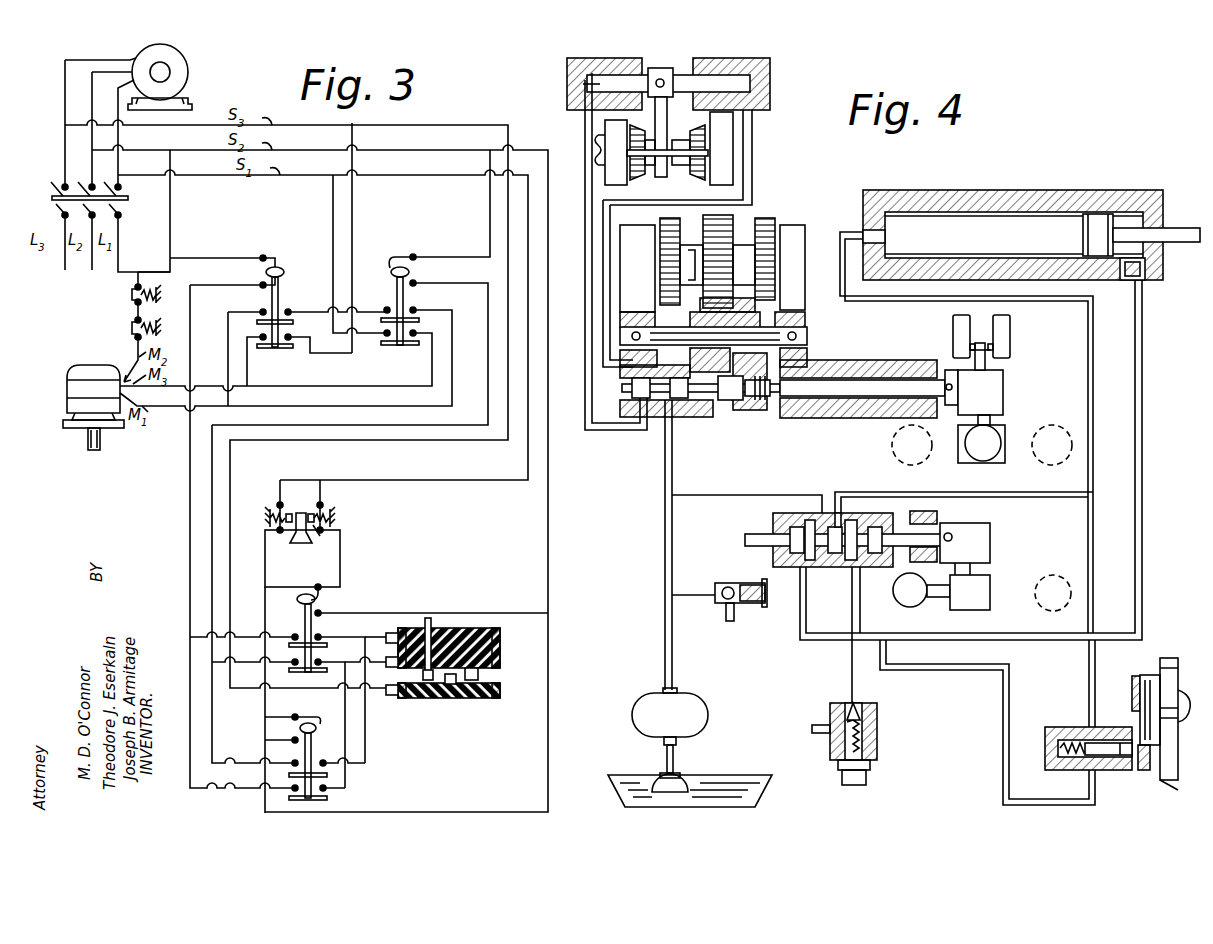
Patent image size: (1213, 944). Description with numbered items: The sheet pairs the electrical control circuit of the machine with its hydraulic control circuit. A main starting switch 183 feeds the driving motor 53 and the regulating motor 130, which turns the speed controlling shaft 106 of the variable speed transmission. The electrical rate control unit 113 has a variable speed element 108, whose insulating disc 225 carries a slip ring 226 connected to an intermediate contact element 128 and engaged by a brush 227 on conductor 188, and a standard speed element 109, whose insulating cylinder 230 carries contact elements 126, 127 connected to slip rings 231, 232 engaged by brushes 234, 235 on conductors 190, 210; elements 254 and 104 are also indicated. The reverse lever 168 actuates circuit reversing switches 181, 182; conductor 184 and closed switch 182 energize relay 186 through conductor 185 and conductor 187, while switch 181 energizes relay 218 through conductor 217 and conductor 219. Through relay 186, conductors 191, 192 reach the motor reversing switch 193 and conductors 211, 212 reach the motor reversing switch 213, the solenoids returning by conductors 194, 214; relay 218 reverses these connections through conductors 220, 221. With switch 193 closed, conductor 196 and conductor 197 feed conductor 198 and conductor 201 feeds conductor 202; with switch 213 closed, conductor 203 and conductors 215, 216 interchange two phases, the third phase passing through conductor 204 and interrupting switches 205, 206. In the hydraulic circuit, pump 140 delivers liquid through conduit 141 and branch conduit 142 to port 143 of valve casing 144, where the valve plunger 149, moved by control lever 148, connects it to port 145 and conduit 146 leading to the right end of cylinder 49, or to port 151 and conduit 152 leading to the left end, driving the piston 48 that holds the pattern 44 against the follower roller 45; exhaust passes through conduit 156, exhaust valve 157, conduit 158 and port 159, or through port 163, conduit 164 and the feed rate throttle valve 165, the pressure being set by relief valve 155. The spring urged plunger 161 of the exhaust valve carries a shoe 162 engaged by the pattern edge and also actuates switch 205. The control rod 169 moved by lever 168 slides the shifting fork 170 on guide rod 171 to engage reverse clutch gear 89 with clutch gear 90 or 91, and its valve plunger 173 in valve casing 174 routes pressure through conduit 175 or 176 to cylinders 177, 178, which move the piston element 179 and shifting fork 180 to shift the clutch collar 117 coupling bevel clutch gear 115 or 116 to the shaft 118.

In FIG. 3, the driving motor 53 is at (188, 62).
In FIG. 3, the main starting switch 183 is at (128, 196).
In FIG. 3, the conductor 204 is at (170, 258).
In FIG. 3, the interrupting switch 205 is at (130, 296).
In FIG. 4, the interrupting switch 205 is at (1050, 757).
In FIG. 3, the interrupting switch 206 is at (130, 330).
In FIG. 3, the regulating motor 130 is at (83, 365).
In FIG. 3, the speed controlling shaft 106 is at (88, 450).
In FIG. 3, the conductor 194 is at (170, 225).
In FIG. 3, the conductor 196 is at (333, 214).
In FIG. 3, the conductor 201 is at (352, 208).
In FIG. 3, the motor reversing switch 193 is at (300, 255).
In FIG. 3, the motor reversing switch 213 is at (394, 273).
In FIG. 3, the conductor 214 is at (488, 228).
In FIG. 3, the conductor 197 is at (300, 305).
In FIG. 3, the conductor 215 is at (366, 312).
In FIG. 3, the conductor 188 is at (506, 272).
In FIG. 3, the conductor 198 is at (228, 350).
In FIG. 3, the conductor 202 is at (250, 363).
In FIG. 3, the conductor 203 is at (302, 386).
In FIG. 3, the conductor 216 is at (396, 404).
In FIG. 3, the conductor 212 is at (288, 436).
In FIG. 3, the conductor 192 is at (188, 470).
In FIG. 3, the conductor 184 is at (442, 480).
In FIG. 3, the conductor 187 is at (546, 505).
In FIG. 3, the circuit reversing switch 181 is at (298, 512).
In FIG. 4, the circuit reversing switch 181 is at (952, 335).
In FIG. 3, the circuit reversing switch 182 is at (322, 547).
In FIG. 4, the circuit reversing switch 182 is at (1010, 333).
In FIG. 3, the reverse lever 168 is at (300, 548).
In FIG. 4, the reverse lever 168 is at (988, 440).
In FIG. 3, the conductor 185 is at (340, 545).
In FIG. 3, the relay 186 is at (322, 606).
In FIG. 3, the conductor 190 is at (338, 637).
In FIG. 3, the conductor 210 is at (340, 662).
In FIG. 3, the conductor 217 is at (264, 586).
In FIG. 3, the conductor 211 is at (244, 660).
In FIG. 3, the conductor 191 is at (244, 636).
In FIG. 3, the relay 218 is at (276, 731).
In FIG. 3, the conductor 221 is at (343, 716).
In FIG. 3, the conductor 220 is at (378, 745).
In FIG. 3, the conductor 219 is at (398, 812).
In FIG. 3, the brush 234 is at (386, 635).
In FIG. 3, the brush 235 is at (386, 659).
In FIG. 3, the contact element 126 is at (422, 674).
In FIG. 3, the brush 227 is at (390, 700).
In FIG. 3, the intermediate contact element 128 is at (445, 700).
In FIG. 3, the plate or disc 225 is at (476, 700).
In FIG. 3, the variable speed element 108 is at (455, 709).
In FIG. 3, the plunger 254 is at (431, 623).
In FIG. 3, the standard speed element 109 is at (442, 637).
In FIG. 3, the slip ring 231 is at (499, 632).
In FIG. 3, the cylinder 230 is at (500, 655).
In FIG. 3, the slip ring 232 is at (499, 667).
In FIG. 3, the contact element 127 is at (480, 676).
In FIG. 3, the slip ring 226 is at (495, 700).
In FIG. 3, the electrical rate control unit 113 is at (560, 630).
In FIG. 4, the shifting fork 180 is at (656, 66).
In FIG. 4, the piston element 179 is at (682, 72).
In FIG. 4, the cylinder 178 is at (765, 76).
In FIG. 4, the cylinder 177 is at (588, 82).
In FIG. 4, the shaft 118 is at (600, 140).
In FIG. 4, the bevel clutch gear 115 is at (640, 130).
In FIG. 4, the bevel clutch gear 116 is at (688, 132).
In FIG. 4, the clutch collar 117 is at (660, 170).
In FIG. 4, the conduit 176 is at (745, 152).
In FIG. 4, the conduit 175 is at (584, 258).
In FIG. 4, the clutch gear 90 is at (665, 216).
In FIG. 4, the reverse clutch gear 89 is at (728, 214).
In FIG. 4, the clutch gear 91 is at (777, 220).
In FIG. 4, the shifting fork 170 is at (712, 313).
In FIG. 4, the guide rod 171 is at (808, 336).
In FIG. 4, the valve plunger 173 is at (620, 392).
In FIG. 4, the valve casing 174 is at (676, 418).
In FIG. 4, the sliding control rod 169 is at (800, 415).
In FIG. 4, the cylinder 49 is at (972, 195).
In FIG. 4, the piston 48 is at (1083, 232).
In FIG. 4, the piston rod 104 is at (1180, 270).
In FIG. 4, the conduit 152 is at (1088, 362).
In FIG. 4, the conduit 146 is at (1110, 462).
In FIG. 4, the branch conduit 142 is at (718, 490).
In FIG. 4, the port 143 is at (852, 530).
In FIG. 4, the port 151 is at (842, 510).
In FIG. 4, the valve casing 144 is at (772, 522).
In FIG. 4, the valve plunger 149 is at (745, 540).
In FIG. 4, the port 145 is at (806, 567).
In FIG. 4, the port 163 is at (860, 570).
In FIG. 4, the port 159 is at (938, 545).
In FIG. 4, the control lever 148 is at (913, 600).
In FIG. 4, the conduit 156 is at (1095, 556).
In FIG. 4, the conduit 141 is at (662, 550).
In FIG. 4, the adjustable relief valve 155 is at (755, 608).
In FIG. 4, the conduit 164 is at (850, 692).
In FIG. 4, the pump 140 is at (698, 728).
In FIG. 4, the feed rate throttle valve 165 is at (878, 748).
In FIG. 4, the conduit 158 is at (1002, 718).
In FIG. 4, the valve plunger 161 is at (1096, 735).
In FIG. 4, the shoe 162 is at (1150, 768).
In FIG. 4, the exhaust valve 157 is at (1110, 784).
In FIG. 4, the pattern 44 is at (1176, 784).
In FIG. 4, the follower roller 45 is at (1170, 656).